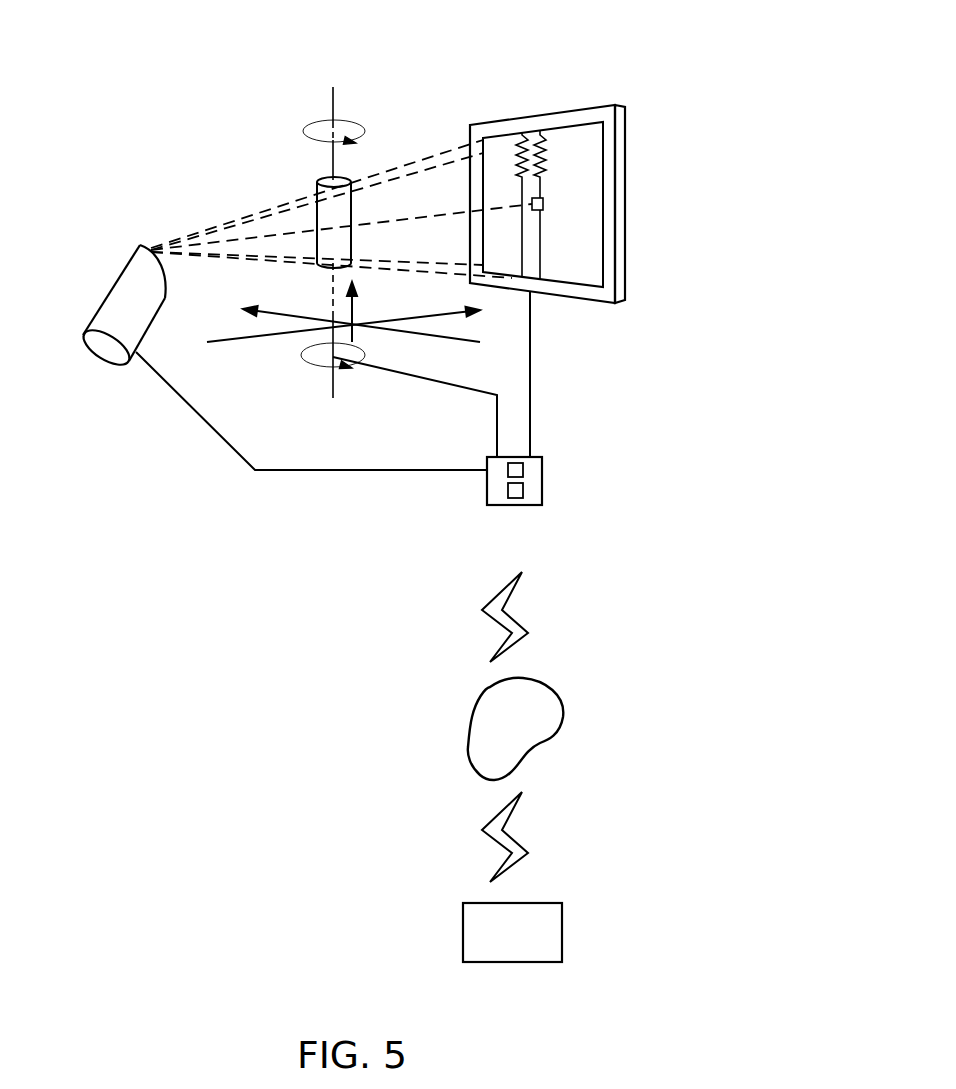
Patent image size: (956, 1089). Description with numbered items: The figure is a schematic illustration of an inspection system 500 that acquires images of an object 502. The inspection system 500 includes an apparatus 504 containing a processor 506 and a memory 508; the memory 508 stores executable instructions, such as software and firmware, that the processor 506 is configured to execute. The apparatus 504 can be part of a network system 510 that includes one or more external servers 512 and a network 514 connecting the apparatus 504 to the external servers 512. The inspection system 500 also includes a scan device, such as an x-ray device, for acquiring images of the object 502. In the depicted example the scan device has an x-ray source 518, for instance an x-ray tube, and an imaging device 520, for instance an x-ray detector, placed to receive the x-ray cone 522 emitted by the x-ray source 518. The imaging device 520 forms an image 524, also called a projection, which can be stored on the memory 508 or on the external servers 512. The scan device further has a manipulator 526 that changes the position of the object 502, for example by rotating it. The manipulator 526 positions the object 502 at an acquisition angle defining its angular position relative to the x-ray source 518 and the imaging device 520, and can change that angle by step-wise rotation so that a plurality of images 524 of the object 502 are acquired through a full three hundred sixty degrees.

The inspection system 500 is at (248, 140).
The object 502 is at (330, 203).
The apparatus 504 is at (543, 493).
The processor 506 is at (525, 472).
The memory 508 is at (525, 492).
The network system 510 is at (575, 735).
The external servers 512 is at (535, 950).
The network 514 is at (537, 740).
The x-ray source 518 is at (102, 302).
The imaging device 520 is at (527, 117).
The x-ray cone 522 is at (392, 167).
The image 524 is at (587, 143).
The manipulator 526 is at (333, 385).